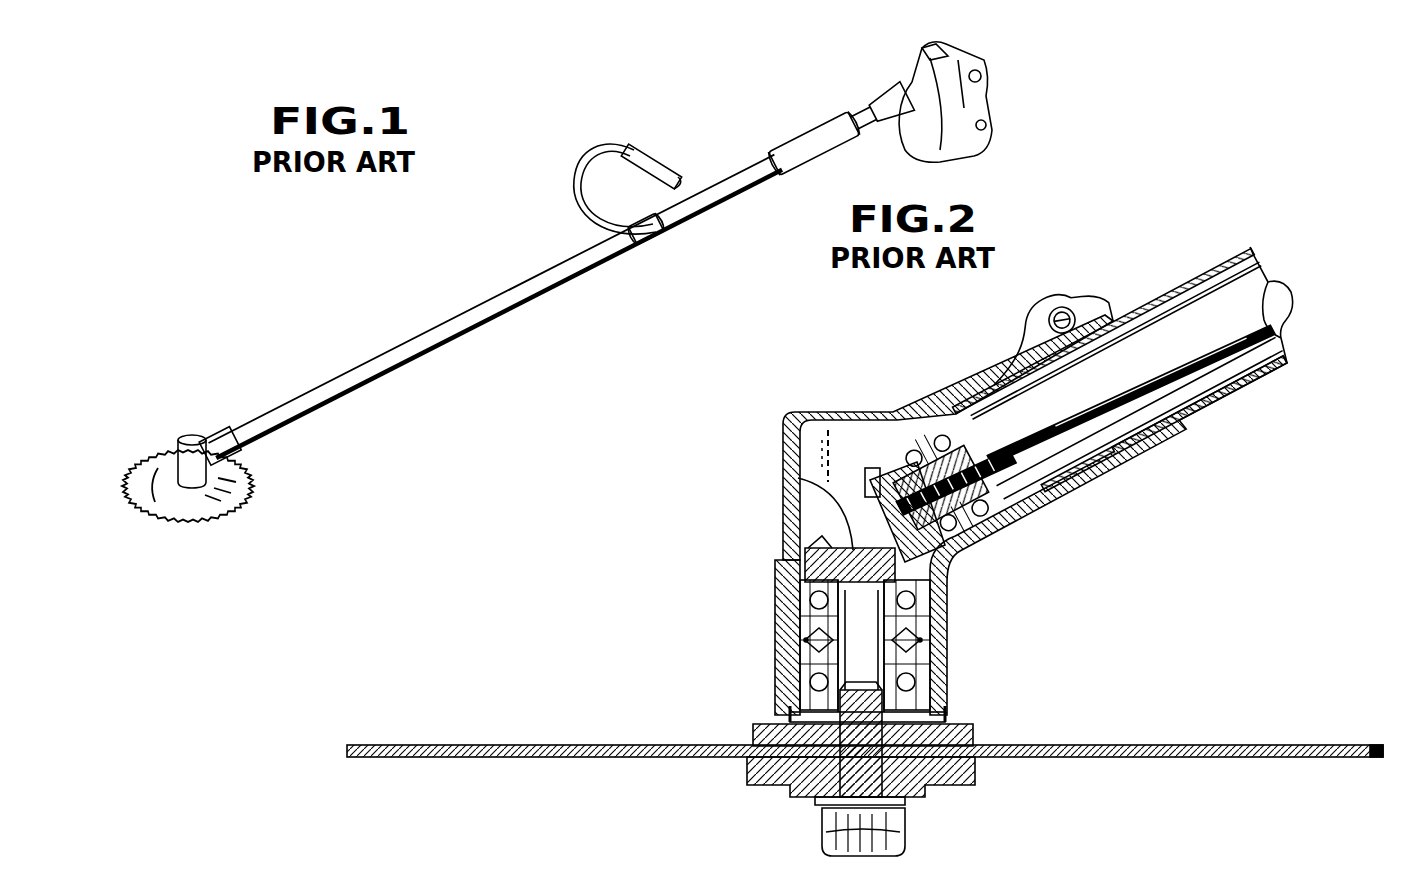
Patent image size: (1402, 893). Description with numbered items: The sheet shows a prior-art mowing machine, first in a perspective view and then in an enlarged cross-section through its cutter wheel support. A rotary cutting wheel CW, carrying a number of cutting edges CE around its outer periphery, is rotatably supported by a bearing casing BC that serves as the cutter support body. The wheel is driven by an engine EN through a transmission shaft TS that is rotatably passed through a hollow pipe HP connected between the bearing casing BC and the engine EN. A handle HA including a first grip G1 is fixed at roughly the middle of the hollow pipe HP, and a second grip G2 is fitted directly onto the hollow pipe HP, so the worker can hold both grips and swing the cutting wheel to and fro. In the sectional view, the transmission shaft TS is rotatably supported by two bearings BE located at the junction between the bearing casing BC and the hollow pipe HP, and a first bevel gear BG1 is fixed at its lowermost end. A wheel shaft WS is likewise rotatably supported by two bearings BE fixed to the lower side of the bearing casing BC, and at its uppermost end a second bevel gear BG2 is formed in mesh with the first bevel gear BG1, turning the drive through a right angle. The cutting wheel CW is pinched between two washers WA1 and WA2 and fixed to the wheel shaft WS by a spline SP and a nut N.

In FIG. 1, the hollow pipe HP is at (467, 332).
In FIG. 2, the hollow pipe HP is at (1191, 278).
In FIG. 1, the bearing casing BC is at (192, 440).
In FIG. 2, the bearing casing BC is at (790, 440).
In FIG. 1, the rotary cutting wheel CW is at (174, 518).
In FIG. 2, the rotary cutting wheel CW is at (1186, 744).
In FIG. 1, the cutting edges CE is at (240, 517).
In FIG. 2, the cutting edges CE is at (1366, 744).
In FIG. 1, the handle HA is at (594, 170).
In FIG. 1, the first grip G1 is at (644, 164).
In FIG. 1, the second grip G2 is at (814, 150).
In FIG. 1, the engine EN is at (948, 66).
In FIG. 2, the transmission shaft TS is at (1268, 298).
In FIG. 2, the first bevel gear BG1 is at (868, 412).
In FIG. 2, the second bevel gear BG2 is at (842, 548).
In FIG. 2, the bearings BE is at (914, 452).
In FIG. 2, the wheel shaft WS is at (862, 628).
In FIG. 2, the spline SP is at (890, 776).
In FIG. 2, the first washer WA1 is at (970, 728).
In FIG. 2, the second washer WA2 is at (968, 776).
In FIG. 2, the nut N is at (822, 836).